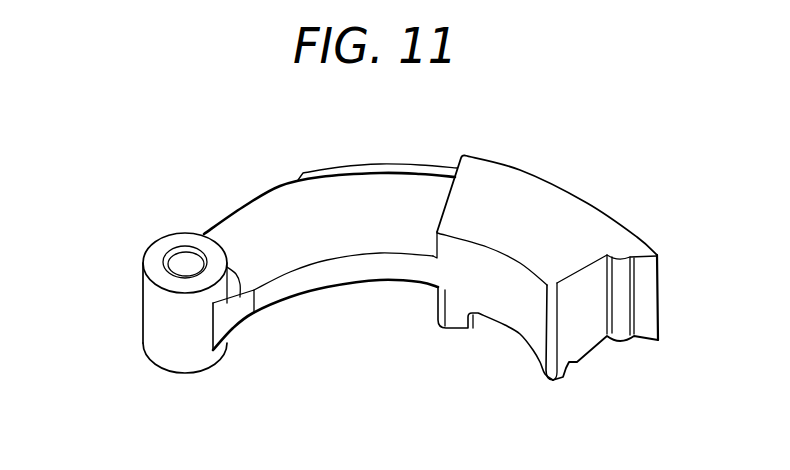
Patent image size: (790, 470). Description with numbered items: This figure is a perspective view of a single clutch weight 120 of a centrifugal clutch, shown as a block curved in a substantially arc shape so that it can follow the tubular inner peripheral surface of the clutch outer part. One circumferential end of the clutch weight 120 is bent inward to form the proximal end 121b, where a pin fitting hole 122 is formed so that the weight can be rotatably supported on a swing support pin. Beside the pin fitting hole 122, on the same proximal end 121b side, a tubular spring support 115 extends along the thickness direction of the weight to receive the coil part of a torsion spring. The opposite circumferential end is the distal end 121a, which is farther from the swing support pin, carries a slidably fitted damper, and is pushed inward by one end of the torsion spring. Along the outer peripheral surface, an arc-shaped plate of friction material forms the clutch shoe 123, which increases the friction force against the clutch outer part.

The clutch weight 120 is at (171, 146).
The spring support 115 is at (183, 358).
The pin fitting hole 122 is at (181, 263).
The proximal end 121b is at (256, 196).
The clutch shoe 123 is at (378, 168).
The distal end 121a is at (575, 362).